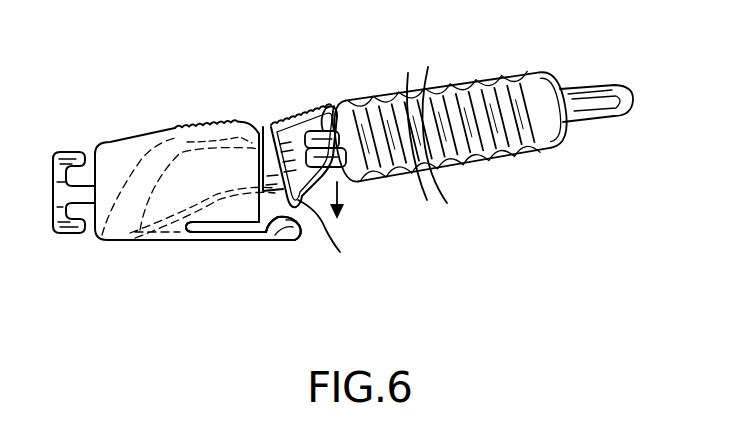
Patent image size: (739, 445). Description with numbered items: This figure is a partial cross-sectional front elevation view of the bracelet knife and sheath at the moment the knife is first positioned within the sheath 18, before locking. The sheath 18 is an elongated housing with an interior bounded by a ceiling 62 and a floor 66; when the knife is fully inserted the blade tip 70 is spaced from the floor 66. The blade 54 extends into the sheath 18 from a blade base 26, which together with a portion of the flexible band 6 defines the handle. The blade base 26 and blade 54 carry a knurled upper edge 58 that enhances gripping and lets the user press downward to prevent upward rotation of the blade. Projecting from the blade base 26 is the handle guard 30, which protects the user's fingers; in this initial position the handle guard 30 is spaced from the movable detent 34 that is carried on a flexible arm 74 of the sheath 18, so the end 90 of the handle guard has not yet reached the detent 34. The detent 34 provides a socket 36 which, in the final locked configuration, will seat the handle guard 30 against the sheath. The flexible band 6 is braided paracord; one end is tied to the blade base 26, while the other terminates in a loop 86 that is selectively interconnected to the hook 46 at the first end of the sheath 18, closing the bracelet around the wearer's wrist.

The flexible band 6 is at (476, 88).
The sheath 18 is at (140, 137).
The blade base 26 is at (328, 118).
The handle guard 30 is at (305, 186).
The detent 34 is at (291, 223).
The socket 36 is at (273, 223).
The hook 46 is at (77, 157).
The blade 54 is at (228, 183).
The knurled upper edge 58 is at (258, 134).
The ceiling 62 is at (172, 145).
The floor 66 is at (163, 228).
The blade tip 70 is at (138, 222).
The arm 74 is at (207, 238).
The loop 86 is at (602, 118).
The end of the handle guard 90 is at (334, 240).